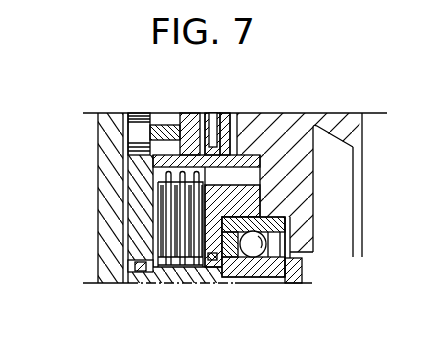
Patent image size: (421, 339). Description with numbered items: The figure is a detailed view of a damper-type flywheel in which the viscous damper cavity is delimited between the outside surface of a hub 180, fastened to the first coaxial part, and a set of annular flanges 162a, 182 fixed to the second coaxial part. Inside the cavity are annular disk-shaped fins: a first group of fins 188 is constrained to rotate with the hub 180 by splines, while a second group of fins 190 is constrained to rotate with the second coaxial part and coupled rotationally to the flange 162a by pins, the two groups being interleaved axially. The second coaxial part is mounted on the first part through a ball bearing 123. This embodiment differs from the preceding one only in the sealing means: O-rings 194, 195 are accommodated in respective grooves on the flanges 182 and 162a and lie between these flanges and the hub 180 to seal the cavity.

The annular flange 162a is at (266, 205).
The annular flange 182 is at (135, 190).
The second group of fins 190 is at (162, 213).
The first group of fins 188 is at (160, 243).
The O-ring 194 is at (143, 273).
The hub 180 is at (193, 268).
The O-ring 195 is at (213, 262).
The ball bearing 123 is at (289, 227).